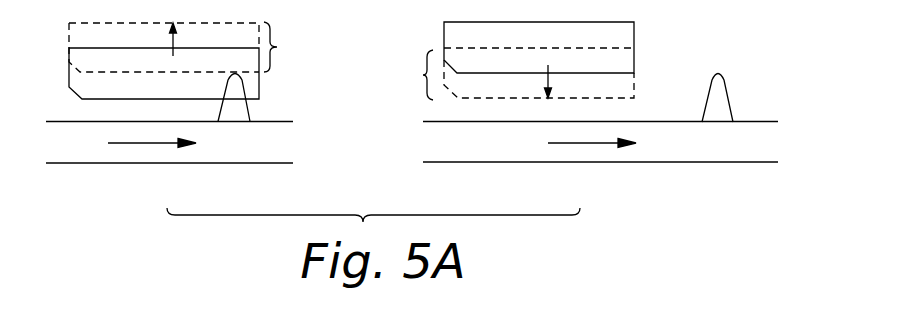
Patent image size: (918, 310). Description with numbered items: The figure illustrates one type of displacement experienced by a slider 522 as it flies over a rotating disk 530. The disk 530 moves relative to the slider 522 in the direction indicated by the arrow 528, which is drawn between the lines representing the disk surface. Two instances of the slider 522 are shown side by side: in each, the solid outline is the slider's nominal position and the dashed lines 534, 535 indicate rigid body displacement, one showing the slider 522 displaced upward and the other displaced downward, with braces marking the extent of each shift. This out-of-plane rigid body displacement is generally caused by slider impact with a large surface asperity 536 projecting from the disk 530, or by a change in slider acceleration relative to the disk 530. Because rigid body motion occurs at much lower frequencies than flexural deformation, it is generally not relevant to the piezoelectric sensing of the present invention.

The slider 522 is at (351, 60).
The arrow 528 is at (153, 143).
The rotating disk 530 is at (339, 147).
The dashed lines 534 is at (295, 47).
The dashed lines 535 is at (405, 75).
The large surface asperity 536 is at (247, 107).